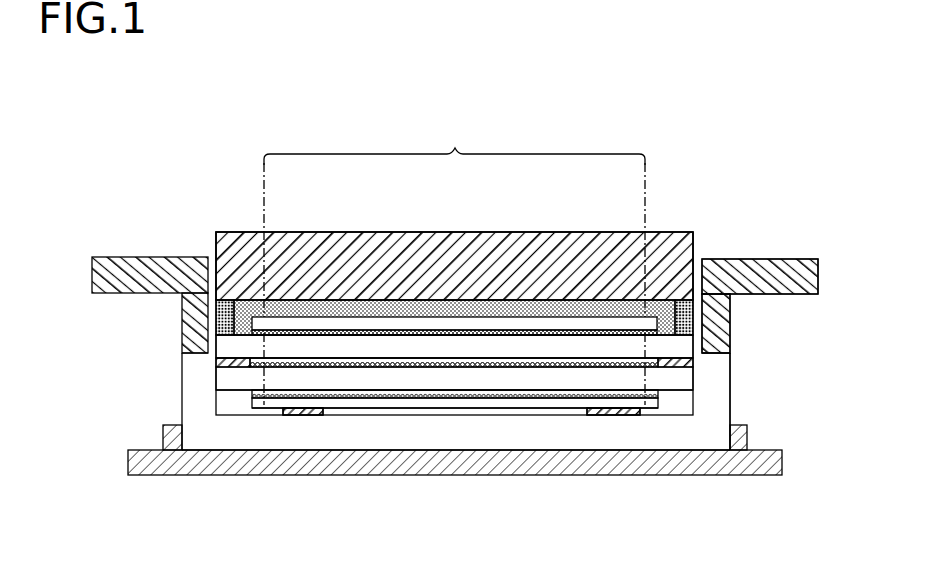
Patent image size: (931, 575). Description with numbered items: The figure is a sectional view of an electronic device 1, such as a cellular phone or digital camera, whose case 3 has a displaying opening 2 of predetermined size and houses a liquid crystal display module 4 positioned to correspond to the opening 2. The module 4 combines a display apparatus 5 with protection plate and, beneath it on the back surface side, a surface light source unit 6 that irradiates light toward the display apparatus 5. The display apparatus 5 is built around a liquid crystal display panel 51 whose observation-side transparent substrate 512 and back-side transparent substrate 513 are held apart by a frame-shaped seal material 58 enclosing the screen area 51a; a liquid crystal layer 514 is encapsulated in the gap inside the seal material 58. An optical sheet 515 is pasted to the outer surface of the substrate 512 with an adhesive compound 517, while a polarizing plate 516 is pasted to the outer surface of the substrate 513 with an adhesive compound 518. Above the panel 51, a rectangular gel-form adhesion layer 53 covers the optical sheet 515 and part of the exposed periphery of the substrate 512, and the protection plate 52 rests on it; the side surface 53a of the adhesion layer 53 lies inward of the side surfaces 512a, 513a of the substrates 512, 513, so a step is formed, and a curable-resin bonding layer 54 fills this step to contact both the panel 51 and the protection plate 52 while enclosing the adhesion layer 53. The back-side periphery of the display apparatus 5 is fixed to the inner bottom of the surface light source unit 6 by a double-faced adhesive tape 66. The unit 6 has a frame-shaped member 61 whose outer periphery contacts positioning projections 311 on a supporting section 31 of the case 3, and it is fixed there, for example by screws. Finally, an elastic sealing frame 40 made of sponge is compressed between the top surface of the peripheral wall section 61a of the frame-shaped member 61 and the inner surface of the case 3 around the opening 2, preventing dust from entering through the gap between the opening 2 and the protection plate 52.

The electronic device 1 is at (460, 72).
The displaying opening 2 is at (698, 263).
The case 3 is at (770, 255).
The liquid crystal display module 4 is at (243, 226).
The display apparatus with protection plate 5 is at (452, 410).
The surface light source unit 6 is at (734, 399).
The supporting section 31 is at (743, 465).
The sealing frame 40 is at (725, 340).
The liquid crystal display panel 51 is at (232, 396).
The screen area 51a is at (454, 263).
The protection plate 52 is at (585, 240).
The adhesion layer 53 is at (478, 310).
The side surface of adhesion layer 53a is at (697, 336).
The bonding layer 54 is at (222, 316).
The seal material 58 is at (218, 362).
The frame-shaped member 61 is at (685, 433).
The peripheral wall section 61a is at (713, 408).
The double-faced adhesive tape 66 is at (287, 414).
The positioning projections 311 is at (173, 444).
The transparent substrate (second transparent substrate) 512 is at (228, 345).
The side surface of transparent substrate 512a is at (697, 346).
The transparent substrate (first transparent substrate) 513 is at (227, 378).
The side surface of transparent substrate 513a is at (695, 374).
The liquid crystal layer 514 is at (465, 364).
The optical sheet 515 is at (553, 322).
The polarizing plate 516 is at (405, 404).
The adhesive compound for optical sheet 517 is at (517, 333).
The adhesive compound for polarizing plate 518 is at (362, 398).